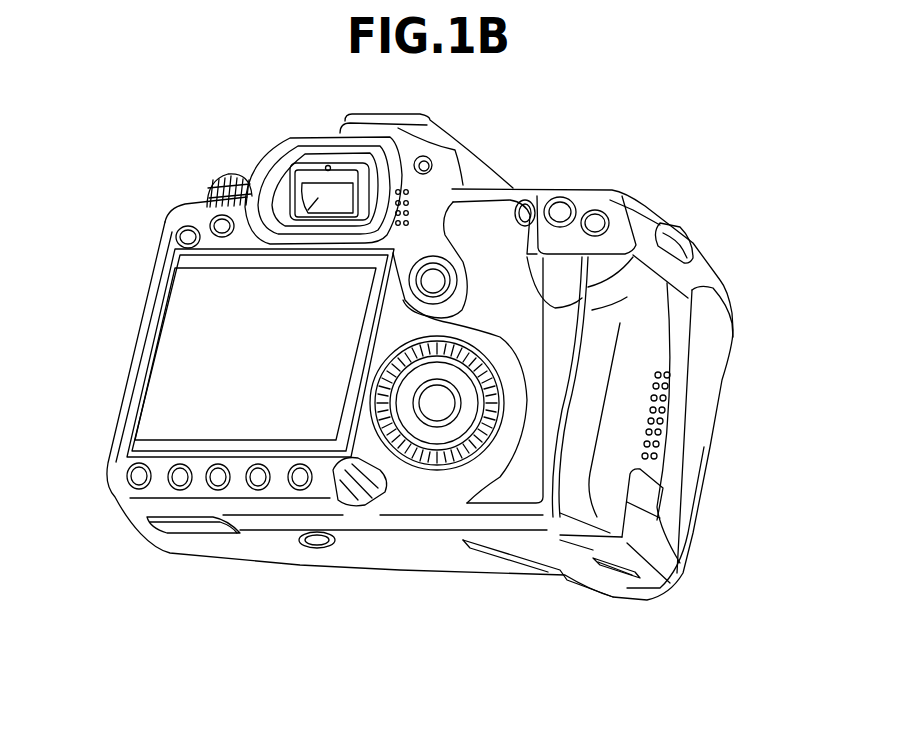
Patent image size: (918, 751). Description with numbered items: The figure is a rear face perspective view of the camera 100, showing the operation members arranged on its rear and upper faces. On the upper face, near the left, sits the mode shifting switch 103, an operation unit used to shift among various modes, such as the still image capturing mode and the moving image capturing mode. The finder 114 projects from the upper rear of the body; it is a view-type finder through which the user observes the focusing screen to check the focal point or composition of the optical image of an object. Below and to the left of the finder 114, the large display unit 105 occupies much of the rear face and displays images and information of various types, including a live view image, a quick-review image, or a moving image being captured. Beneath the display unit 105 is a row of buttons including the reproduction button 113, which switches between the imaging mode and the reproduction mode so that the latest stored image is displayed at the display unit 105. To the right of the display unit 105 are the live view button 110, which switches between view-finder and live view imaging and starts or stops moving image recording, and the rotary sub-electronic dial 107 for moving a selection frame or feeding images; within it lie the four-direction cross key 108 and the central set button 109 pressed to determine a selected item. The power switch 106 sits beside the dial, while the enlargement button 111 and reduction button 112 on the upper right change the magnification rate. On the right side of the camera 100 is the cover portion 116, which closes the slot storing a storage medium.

The camera 100 is at (697, 182).
The mode shifting switch 103 is at (220, 177).
The display unit 105 is at (170, 347).
The power switch 106 is at (362, 493).
The sub-electronic dial 107 is at (415, 433).
The cross key 108 is at (422, 457).
The set button 109 is at (432, 405).
The live view button 110 is at (430, 278).
The enlargement button 111 is at (590, 213).
The reduction button 112 is at (558, 207).
The reproduction button 113 is at (297, 482).
The finder 114 is at (323, 212).
The cover portion 116 is at (633, 387).